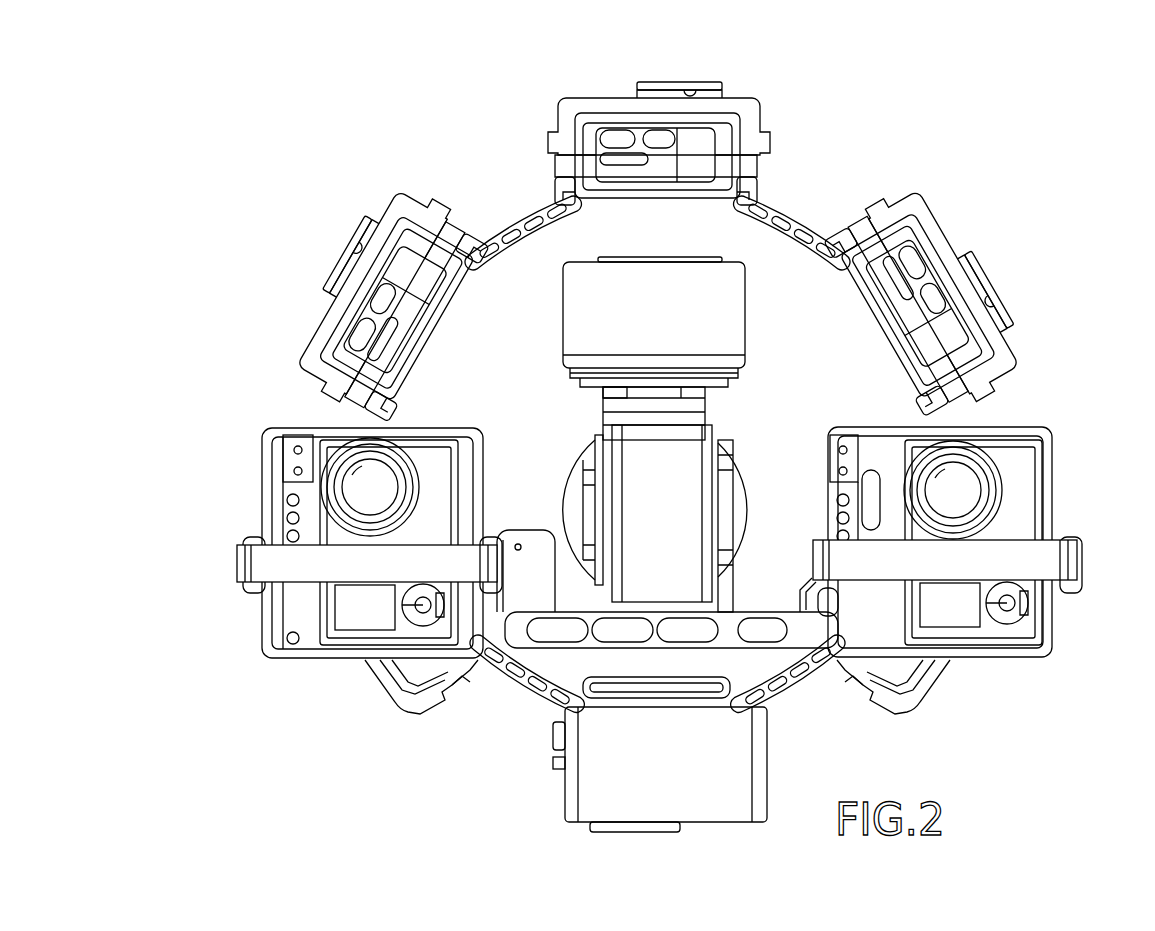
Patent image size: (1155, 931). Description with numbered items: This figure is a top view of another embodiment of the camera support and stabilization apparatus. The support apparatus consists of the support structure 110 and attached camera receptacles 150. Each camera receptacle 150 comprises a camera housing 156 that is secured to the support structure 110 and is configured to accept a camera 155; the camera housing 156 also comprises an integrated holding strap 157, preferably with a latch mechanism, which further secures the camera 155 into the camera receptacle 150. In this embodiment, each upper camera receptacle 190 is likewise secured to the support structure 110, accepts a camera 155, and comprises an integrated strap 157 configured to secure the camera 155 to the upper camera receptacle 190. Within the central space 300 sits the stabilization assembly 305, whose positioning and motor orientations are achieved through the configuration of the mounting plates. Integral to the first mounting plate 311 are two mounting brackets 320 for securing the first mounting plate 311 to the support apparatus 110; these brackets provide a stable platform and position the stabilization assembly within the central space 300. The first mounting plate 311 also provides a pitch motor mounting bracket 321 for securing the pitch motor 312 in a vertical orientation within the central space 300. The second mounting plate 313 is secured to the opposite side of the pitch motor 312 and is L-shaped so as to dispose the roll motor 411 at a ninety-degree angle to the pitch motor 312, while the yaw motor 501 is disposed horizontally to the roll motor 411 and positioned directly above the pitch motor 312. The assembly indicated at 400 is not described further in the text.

The support structure 110 is at (805, 655).
The camera receptacle 150 is at (548, 96).
The camera 155 is at (458, 470).
The camera housing 156 is at (768, 158).
The integrated holding strap 157 is at (760, 105).
The upper camera receptacle 190 is at (310, 660).
The central space 300 is at (784, 272).
The stabilization assembly 305 is at (600, 399).
The first mounting plate 311 is at (763, 655).
The pitch motor 312 is at (647, 513).
The second mounting plate 313 is at (705, 404).
The mounting bracket 320 is at (518, 598).
The pitch motor mounting bracket 321 is at (735, 585).
The camera unit 400 is at (768, 384).
The roll motor 411 is at (655, 319).
The yaw motor 501 is at (740, 484).